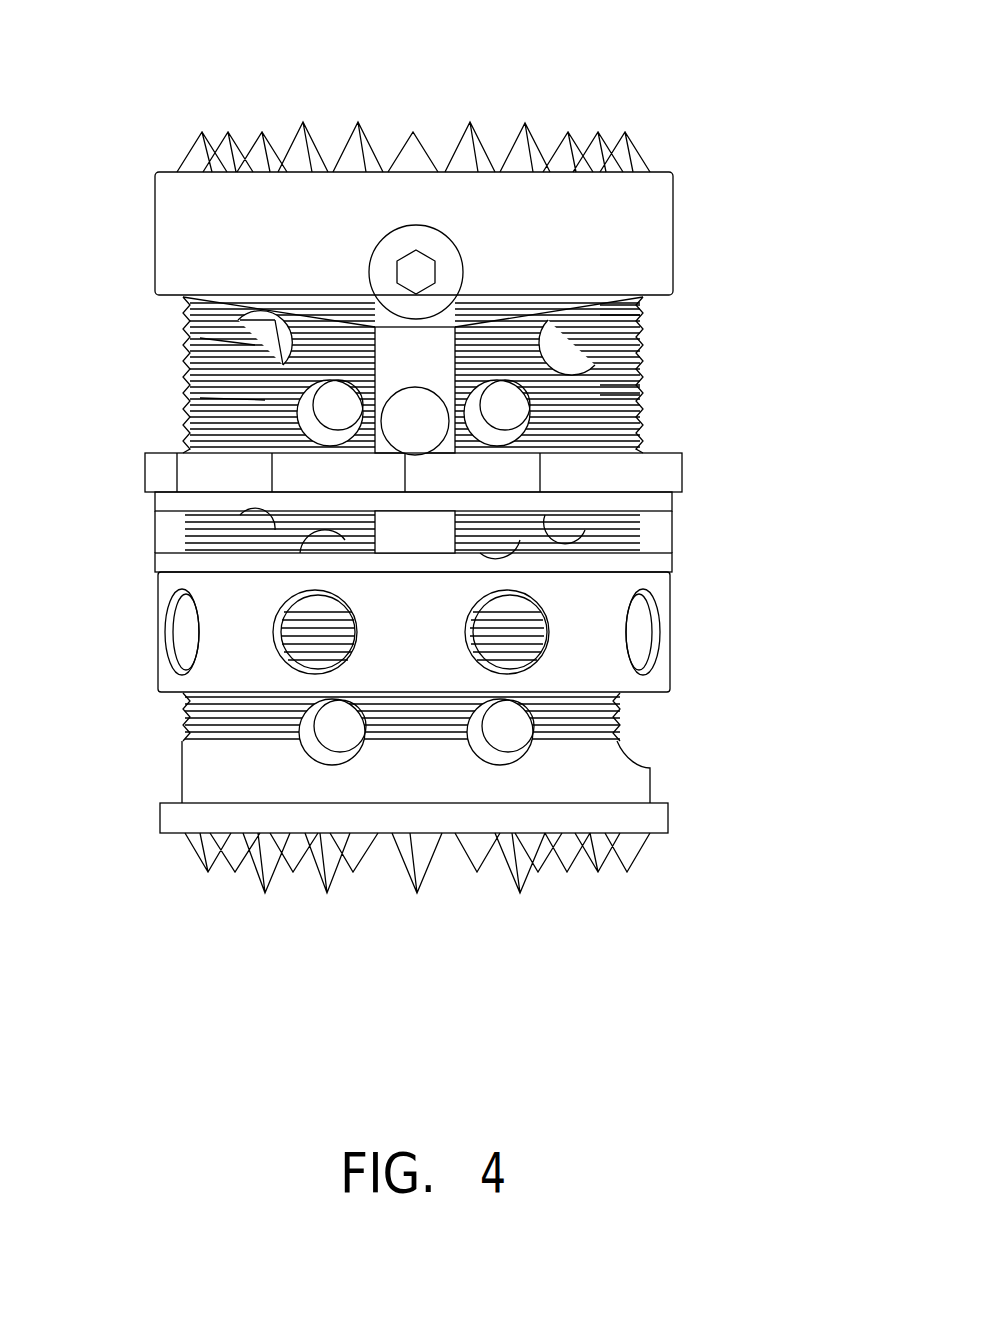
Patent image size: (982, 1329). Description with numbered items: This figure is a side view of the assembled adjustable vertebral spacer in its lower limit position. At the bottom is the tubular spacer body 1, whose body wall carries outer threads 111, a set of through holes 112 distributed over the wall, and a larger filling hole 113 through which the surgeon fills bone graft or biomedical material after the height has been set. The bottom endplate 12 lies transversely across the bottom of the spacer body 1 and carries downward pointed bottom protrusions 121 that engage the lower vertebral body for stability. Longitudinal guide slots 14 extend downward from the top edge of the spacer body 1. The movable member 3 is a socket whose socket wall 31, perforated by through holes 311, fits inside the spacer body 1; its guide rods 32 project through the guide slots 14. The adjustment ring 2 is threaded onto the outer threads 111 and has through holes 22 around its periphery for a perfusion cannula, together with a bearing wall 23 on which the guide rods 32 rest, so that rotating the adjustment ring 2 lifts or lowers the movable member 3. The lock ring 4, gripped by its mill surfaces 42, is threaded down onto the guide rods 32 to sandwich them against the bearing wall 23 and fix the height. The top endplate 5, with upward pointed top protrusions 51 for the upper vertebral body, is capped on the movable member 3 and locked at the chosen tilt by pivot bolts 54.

The spacer body 1 is at (638, 783).
The outer threads 111 is at (640, 325).
The through holes 112 is at (645, 390).
The filling hole 113 is at (628, 720).
The bottom endplate 12 is at (338, 815).
The bottom protrusions 121 is at (418, 845).
The longitudinal guide slots 14 is at (645, 408).
The adjustment ring 2 is at (590, 632).
The through holes 22 is at (650, 618).
The bearing wall 23 is at (155, 537).
The movable member 3 is at (185, 333).
The socket wall 31 is at (185, 397).
The through holes 311 is at (408, 437).
The guide rods 32 is at (662, 528).
The lock ring 4 is at (665, 453).
The mill surfaces 42 is at (658, 471).
The top endplate 5 is at (637, 222).
The top protrusions 51 is at (480, 165).
The pivot bolts 54 is at (407, 242).